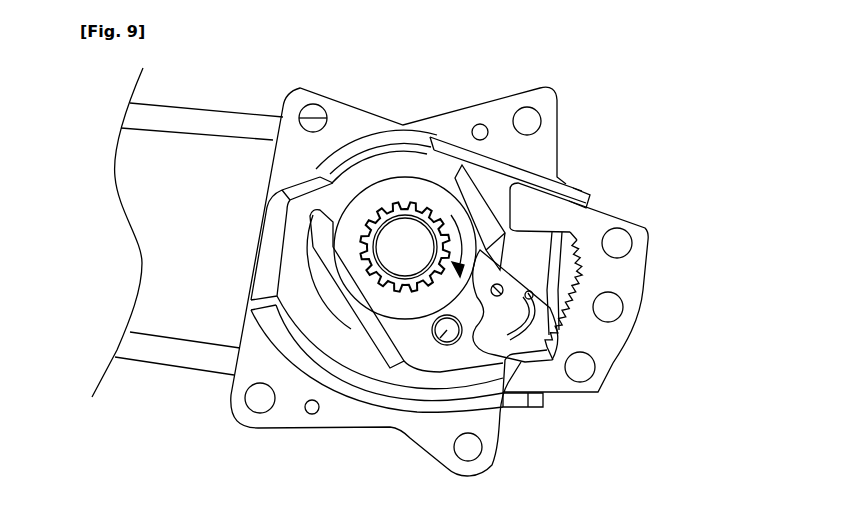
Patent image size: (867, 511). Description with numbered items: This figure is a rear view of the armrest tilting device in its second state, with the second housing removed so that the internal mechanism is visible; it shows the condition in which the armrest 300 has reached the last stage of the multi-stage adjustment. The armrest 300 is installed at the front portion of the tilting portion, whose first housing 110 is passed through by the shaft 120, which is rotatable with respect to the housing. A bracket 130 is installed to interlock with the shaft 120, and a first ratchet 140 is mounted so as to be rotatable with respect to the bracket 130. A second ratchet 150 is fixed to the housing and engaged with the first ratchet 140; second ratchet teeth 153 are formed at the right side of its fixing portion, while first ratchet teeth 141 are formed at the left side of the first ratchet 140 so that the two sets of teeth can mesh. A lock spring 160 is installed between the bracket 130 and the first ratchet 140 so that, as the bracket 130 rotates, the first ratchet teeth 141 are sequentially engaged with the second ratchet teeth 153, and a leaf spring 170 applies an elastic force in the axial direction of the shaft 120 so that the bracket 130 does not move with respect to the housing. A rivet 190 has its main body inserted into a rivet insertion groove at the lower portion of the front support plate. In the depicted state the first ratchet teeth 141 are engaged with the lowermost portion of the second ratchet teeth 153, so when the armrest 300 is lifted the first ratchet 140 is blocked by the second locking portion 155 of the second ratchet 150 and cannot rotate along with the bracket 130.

The armrest 300 is at (212, 157).
The first housing 110 is at (547, 150).
The shaft 120 is at (418, 243).
The leaf spring 170 is at (403, 182).
The second ratchet 150 is at (662, 208).
The second ratchet teeth 153 is at (583, 273).
The first ratchet 140 is at (590, 308).
The first ratchet teeth 141 is at (563, 327).
The lock spring 160 is at (575, 354).
The second locking portion 155 is at (528, 407).
The bracket 130 is at (508, 365).
The rivet 190 is at (442, 334).